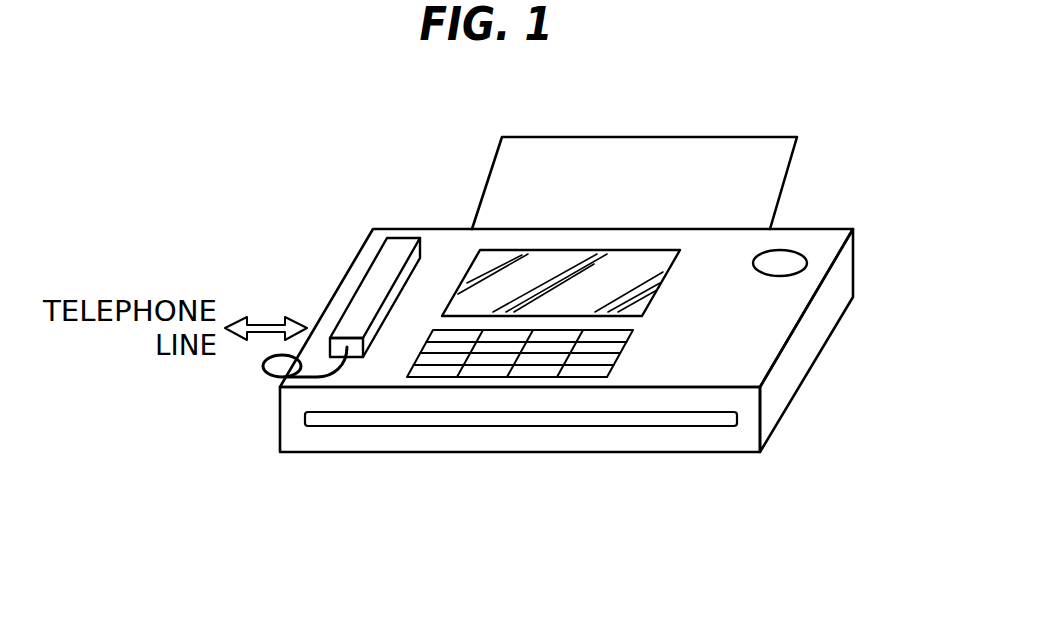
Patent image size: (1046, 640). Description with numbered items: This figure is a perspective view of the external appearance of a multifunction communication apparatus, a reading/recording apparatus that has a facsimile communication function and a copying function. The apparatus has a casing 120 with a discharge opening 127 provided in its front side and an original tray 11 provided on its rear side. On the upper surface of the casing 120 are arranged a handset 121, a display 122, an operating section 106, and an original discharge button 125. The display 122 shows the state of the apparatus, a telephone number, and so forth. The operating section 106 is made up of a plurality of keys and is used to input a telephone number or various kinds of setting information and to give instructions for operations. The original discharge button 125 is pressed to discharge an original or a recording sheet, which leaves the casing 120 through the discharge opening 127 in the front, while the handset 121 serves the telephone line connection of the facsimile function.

The original tray 11 is at (773, 163).
The casing 120 is at (855, 273).
The handset 121 is at (367, 297).
The display 122 is at (518, 265).
The original discharge button 125 is at (783, 263).
The operating section 106 is at (495, 358).
The discharge opening 127 is at (413, 419).